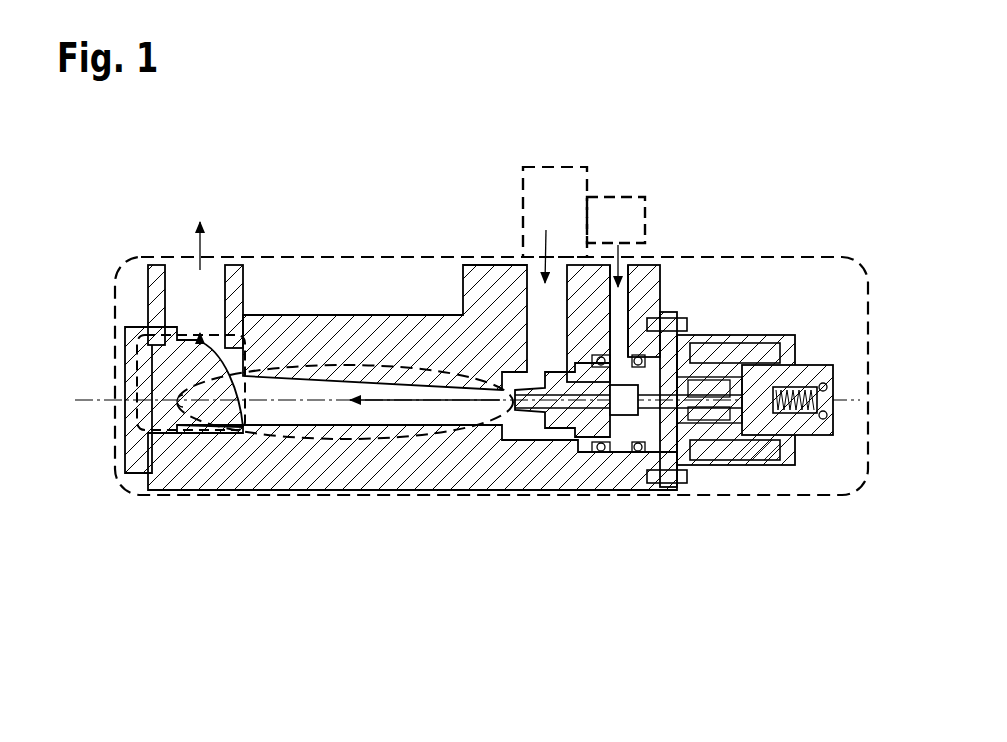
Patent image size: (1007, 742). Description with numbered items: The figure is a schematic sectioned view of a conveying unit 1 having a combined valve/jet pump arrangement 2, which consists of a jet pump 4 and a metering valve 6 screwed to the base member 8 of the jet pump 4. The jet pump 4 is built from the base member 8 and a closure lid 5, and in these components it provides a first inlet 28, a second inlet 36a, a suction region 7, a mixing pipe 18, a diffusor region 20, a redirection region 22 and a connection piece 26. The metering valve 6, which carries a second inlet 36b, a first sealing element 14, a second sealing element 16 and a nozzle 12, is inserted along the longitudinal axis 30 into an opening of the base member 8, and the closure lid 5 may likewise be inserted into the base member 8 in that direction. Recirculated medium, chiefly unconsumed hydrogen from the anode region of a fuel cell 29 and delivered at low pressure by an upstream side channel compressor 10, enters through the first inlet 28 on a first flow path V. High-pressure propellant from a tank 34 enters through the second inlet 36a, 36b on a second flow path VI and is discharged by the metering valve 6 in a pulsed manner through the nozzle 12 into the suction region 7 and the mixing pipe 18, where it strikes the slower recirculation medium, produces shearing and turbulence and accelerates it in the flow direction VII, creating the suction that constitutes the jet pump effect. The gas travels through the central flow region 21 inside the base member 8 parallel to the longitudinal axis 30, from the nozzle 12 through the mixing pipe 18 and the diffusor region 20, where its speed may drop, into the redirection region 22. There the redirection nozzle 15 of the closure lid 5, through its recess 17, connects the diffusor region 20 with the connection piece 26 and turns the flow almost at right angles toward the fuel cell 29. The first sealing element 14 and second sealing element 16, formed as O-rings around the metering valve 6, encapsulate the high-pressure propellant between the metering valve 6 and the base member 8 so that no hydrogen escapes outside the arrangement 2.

The conveying unit 1 is at (95, 183).
The combined valve/jet pump arrangement 2 is at (817, 255).
The jet pump 4 is at (352, 312).
The closure lid 5 is at (137, 457).
The metering valve 6 is at (732, 478).
The suction region 7 is at (510, 365).
The base member 8 is at (303, 480).
The side channel compressor 10 is at (552, 183).
The nozzle 12 is at (520, 420).
The first sealing element 14 is at (598, 452).
The redirection nozzle 15 is at (198, 435).
The second sealing element 16 is at (636, 452).
The recess 17 is at (220, 367).
The mixing pipe 18 is at (403, 377).
The diffusor region 20 is at (275, 378).
The central flow region 21 is at (427, 460).
The redirection region 22 is at (127, 347).
The connection piece 26 is at (152, 300).
The first inlet 28 is at (547, 320).
The fuel cell 29 is at (555, 212).
The longitudinal axis 30 is at (853, 400).
The tank 34 is at (632, 200).
The second inlet 36a is at (622, 312).
The second inlet 36b is at (620, 357).
The first flow path V is at (546, 230).
The second flow path VI is at (618, 245).
The flow direction VII is at (200, 250).